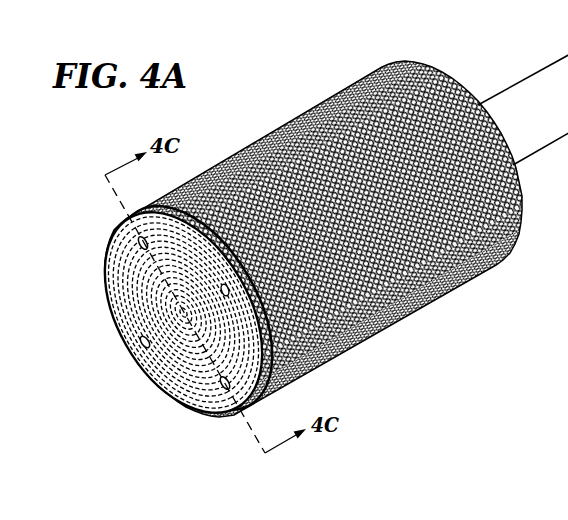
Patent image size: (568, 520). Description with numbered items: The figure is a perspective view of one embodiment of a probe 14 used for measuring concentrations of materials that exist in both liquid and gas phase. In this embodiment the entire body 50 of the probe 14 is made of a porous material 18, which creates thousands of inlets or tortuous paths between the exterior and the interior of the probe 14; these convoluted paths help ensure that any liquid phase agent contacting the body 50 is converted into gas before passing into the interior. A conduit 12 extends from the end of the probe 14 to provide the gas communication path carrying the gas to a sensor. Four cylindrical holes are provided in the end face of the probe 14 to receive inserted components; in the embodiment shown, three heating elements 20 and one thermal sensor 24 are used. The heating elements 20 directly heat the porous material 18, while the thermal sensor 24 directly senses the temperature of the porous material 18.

The conduit 12 is at (565, 55).
The probe 14 is at (307, 241).
The porous material 18 is at (128, 345).
The heating elements 20 is at (110, 259).
The thermal sensor 24 is at (178, 398).
The body 50 is at (381, 342).